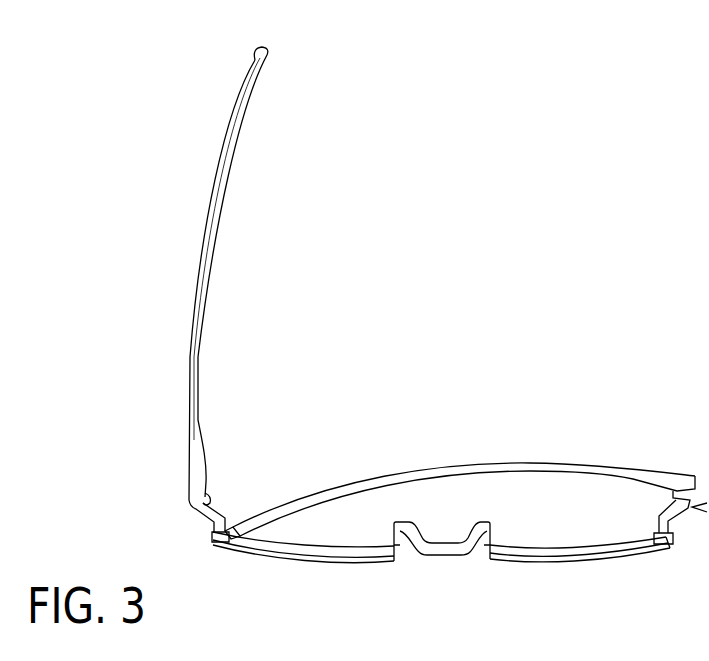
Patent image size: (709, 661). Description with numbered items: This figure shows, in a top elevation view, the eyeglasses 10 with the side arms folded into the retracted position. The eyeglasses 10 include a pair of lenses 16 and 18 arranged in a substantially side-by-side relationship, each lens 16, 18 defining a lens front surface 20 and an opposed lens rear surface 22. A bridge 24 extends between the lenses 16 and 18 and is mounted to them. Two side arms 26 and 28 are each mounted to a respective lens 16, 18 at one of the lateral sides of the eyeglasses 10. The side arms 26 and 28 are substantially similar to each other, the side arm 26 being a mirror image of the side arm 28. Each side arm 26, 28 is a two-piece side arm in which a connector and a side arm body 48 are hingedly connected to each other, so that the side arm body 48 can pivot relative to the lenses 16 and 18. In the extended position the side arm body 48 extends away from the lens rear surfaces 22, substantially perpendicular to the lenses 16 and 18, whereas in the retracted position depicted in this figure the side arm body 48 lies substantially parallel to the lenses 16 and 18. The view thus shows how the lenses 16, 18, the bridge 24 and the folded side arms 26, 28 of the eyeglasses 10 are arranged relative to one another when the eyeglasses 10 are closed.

The eyeglasses 10 is at (502, 307).
The lens 16 is at (321, 570).
The lens 18 is at (614, 568).
The lens front surface 20 is at (263, 555).
The lens rear surface 22 is at (308, 548).
The bridge 24 is at (437, 530).
The side arm 26 is at (175, 349).
The side arm 28 is at (657, 414).
The side arm body 48 is at (566, 450).